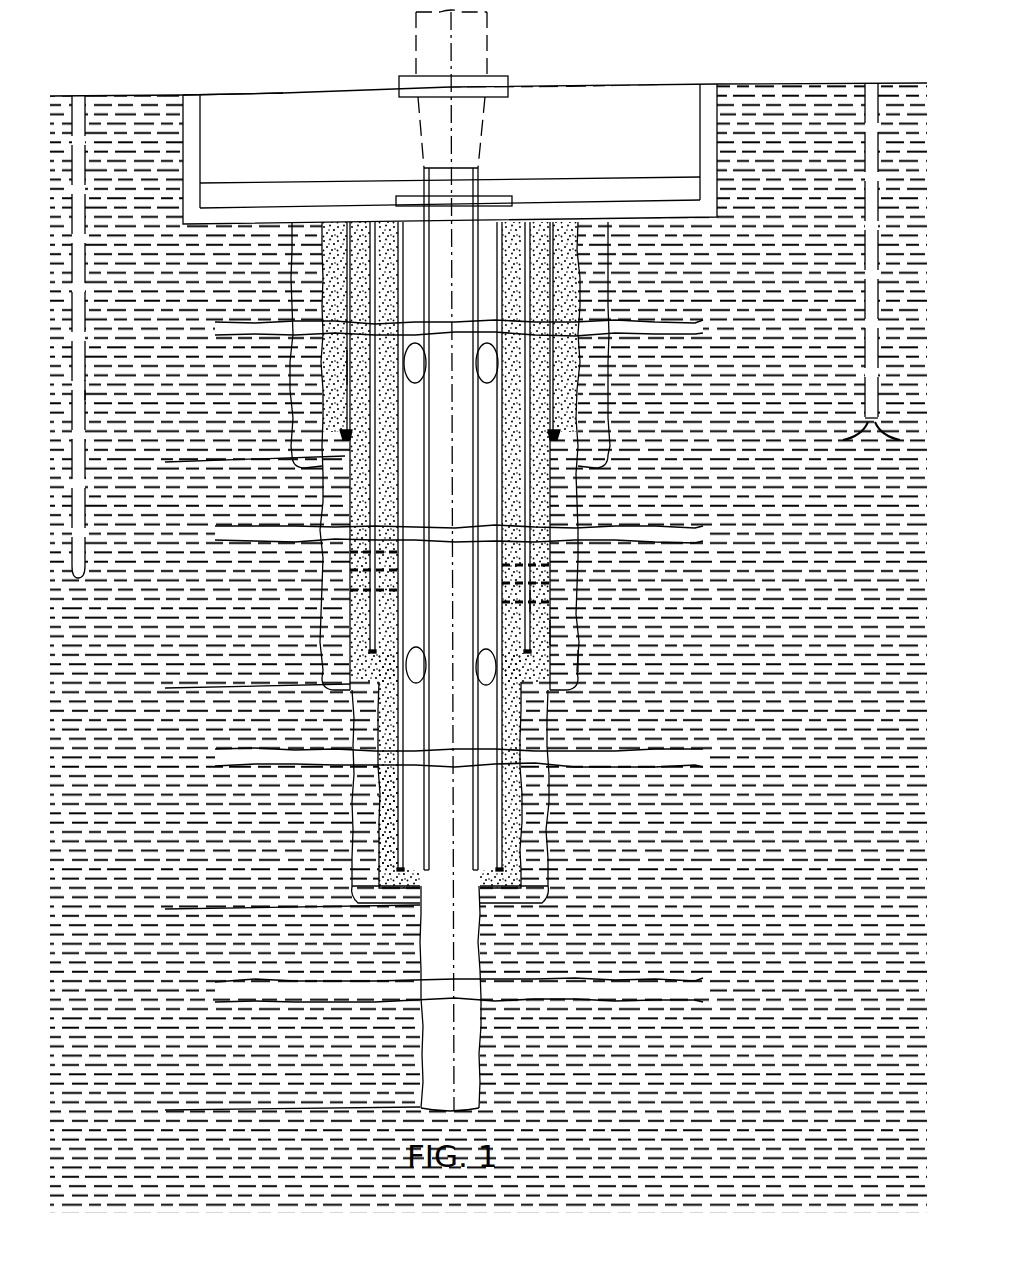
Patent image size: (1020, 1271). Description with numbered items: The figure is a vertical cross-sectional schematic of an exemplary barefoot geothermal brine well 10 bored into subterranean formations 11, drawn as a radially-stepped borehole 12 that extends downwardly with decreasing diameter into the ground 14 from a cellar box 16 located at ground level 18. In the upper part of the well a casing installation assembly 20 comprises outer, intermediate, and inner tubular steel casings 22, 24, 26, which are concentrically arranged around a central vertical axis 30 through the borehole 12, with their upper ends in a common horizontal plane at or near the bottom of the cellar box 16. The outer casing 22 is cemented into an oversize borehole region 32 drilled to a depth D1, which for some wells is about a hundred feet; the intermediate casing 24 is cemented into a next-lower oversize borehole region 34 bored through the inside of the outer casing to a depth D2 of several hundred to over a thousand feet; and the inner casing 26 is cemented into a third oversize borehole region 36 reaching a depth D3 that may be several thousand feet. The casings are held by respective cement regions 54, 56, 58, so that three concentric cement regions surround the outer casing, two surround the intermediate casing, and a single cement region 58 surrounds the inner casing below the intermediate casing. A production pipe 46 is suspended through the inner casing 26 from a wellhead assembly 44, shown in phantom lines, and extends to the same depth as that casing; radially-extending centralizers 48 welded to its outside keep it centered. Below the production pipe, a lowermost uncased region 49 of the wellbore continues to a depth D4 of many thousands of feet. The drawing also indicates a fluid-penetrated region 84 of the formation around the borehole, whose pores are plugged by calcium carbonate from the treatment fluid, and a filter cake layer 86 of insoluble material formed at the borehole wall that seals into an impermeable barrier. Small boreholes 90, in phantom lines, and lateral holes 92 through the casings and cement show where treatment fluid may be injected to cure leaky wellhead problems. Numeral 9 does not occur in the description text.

The injection well 9 is at (862, 373).
The well 10 is at (284, 92).
The subterranean formations 11 is at (488, 648).
The borehole 12 is at (364, 852).
The ground 14 is at (97, 337).
The cellar box 16 is at (248, 228).
The ground level 18 is at (106, 95).
The casing installation assembly 20 is at (330, 620).
The outer casing 22 is at (346, 420).
The intermediate casing 24 is at (368, 490).
The inner casing 26 is at (398, 704).
The central vertical axis 30 is at (453, 107).
The oversize borehole region 32 is at (345, 368).
The borehole region 34 is at (357, 552).
The borehole region 36 is at (386, 793).
The wellhead assembly 44 is at (489, 60).
The production pipe 46 is at (425, 822).
The centralizers 48 is at (413, 368).
The uncased region 49 is at (416, 936).
The cement region 54 is at (333, 287).
The cement region 56 is at (356, 497).
The cement region 58 is at (390, 729).
The fluid-penetrated region 84 is at (565, 660).
The filter cake layer 86 is at (552, 632).
The small boreholes 90 is at (87, 392).
The lateral holes 92 is at (540, 606).
The depth of borehole region 32 D1 is at (240, 462).
The depth of borehole region 34 D2 is at (242, 689).
The depth of borehole region 36 D3 is at (280, 913).
The total depth of uncased region D4 is at (280, 1115).